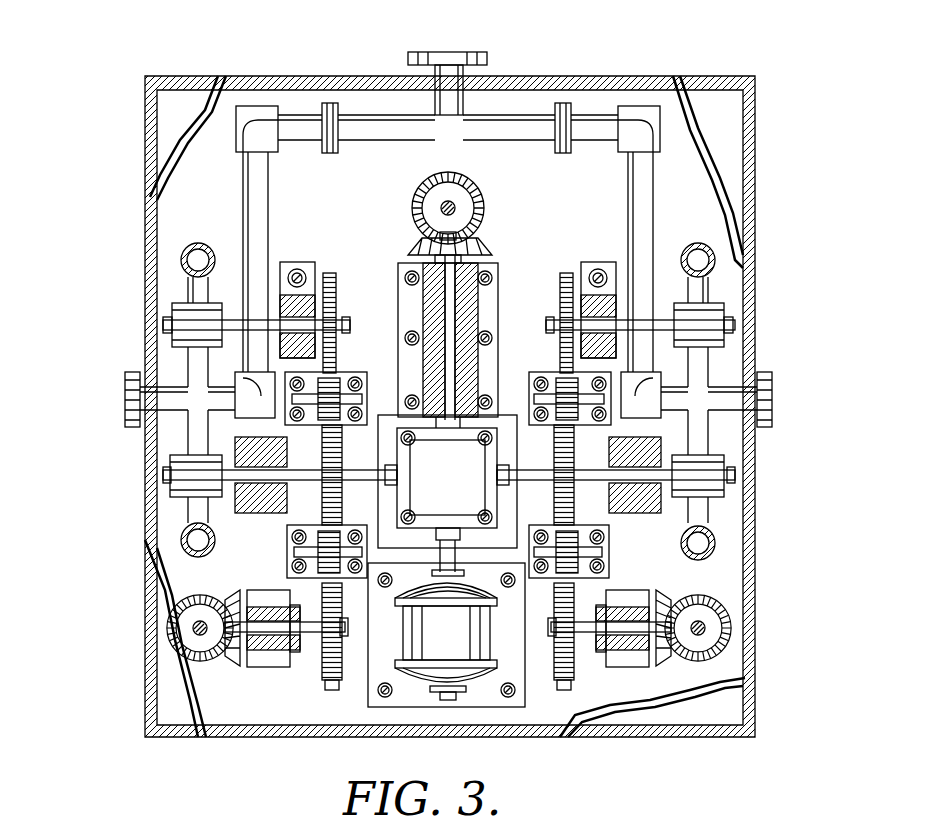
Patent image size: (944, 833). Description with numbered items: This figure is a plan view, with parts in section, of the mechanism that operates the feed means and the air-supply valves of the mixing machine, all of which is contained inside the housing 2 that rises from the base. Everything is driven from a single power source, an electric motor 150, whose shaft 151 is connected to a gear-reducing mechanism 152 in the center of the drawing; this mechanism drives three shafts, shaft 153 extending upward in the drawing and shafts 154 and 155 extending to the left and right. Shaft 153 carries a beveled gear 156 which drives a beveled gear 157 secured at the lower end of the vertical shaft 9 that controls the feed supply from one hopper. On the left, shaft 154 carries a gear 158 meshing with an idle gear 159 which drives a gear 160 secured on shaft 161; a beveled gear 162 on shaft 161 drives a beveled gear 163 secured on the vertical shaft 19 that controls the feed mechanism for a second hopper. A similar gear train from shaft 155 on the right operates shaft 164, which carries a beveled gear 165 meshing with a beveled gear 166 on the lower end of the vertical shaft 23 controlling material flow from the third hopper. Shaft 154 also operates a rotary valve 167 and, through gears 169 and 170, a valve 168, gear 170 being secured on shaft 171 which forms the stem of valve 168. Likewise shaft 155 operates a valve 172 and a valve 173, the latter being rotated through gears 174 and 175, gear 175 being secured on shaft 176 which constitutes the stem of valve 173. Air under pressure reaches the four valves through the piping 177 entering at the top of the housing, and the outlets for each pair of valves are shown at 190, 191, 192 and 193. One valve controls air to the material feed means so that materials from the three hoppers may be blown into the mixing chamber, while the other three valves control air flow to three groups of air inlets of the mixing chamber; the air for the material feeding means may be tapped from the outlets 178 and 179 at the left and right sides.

The housing 2 is at (578, 76).
The shaft 9 is at (456, 203).
The vertical shaft 19 is at (192, 632).
The vertical shaft 23 is at (706, 630).
The electric motor 150 is at (446, 635).
The shaft 151 is at (447, 545).
The gear-reducing mechanism 152 is at (447, 481).
The shaft 153 is at (452, 305).
The shaft 154 is at (268, 455).
The shaft 155 is at (735, 477).
The beveled gear 156 is at (478, 247).
The beveled gear 157 is at (420, 192).
The gear 158 is at (325, 450).
The idle gear 159 is at (300, 545).
The gear 160 is at (330, 690).
The shaft 161 is at (268, 630).
The beveled gear 162 is at (237, 660).
The beveled gear 163 is at (172, 620).
The shaft 164 is at (630, 628).
The beveled gear 165 is at (668, 606).
The beveled gear 166 is at (722, 618).
The rotary valve 167 is at (205, 472).
The valve 168 is at (172, 322).
The gear 169 is at (333, 390).
The gear 170 is at (335, 292).
The shaft 171 is at (168, 331).
The valve 172 is at (722, 465).
The valve 173 is at (724, 322).
The gear 174 is at (552, 380).
The gear 175 is at (565, 270).
The shaft 176 is at (728, 330).
The piping 177 is at (470, 55).
The outlet 178 is at (125, 396).
The outlet 179 is at (772, 400).
The outlet 190 is at (698, 248).
The outlet 191 is at (705, 546).
The outlet 192 is at (195, 540).
The outlet 193 is at (212, 236).